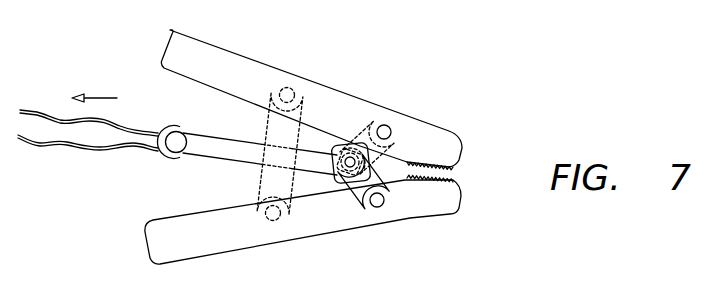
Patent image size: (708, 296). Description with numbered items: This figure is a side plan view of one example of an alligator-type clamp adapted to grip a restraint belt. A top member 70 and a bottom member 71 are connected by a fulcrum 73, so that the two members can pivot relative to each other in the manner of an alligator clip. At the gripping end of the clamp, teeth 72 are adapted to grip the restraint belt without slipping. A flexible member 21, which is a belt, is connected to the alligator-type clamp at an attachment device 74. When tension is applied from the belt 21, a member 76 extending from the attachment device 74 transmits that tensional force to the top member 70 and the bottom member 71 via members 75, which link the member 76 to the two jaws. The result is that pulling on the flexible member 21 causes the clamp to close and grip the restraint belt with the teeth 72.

The flexible member 21 is at (40, 109).
The top member 70 is at (333, 100).
The bottom member 71 is at (326, 227).
The teeth 72 is at (458, 172).
The fulcrum 73 is at (278, 125).
The attachment device 74 is at (163, 158).
The members 75 is at (395, 130).
The member 76 is at (216, 133).